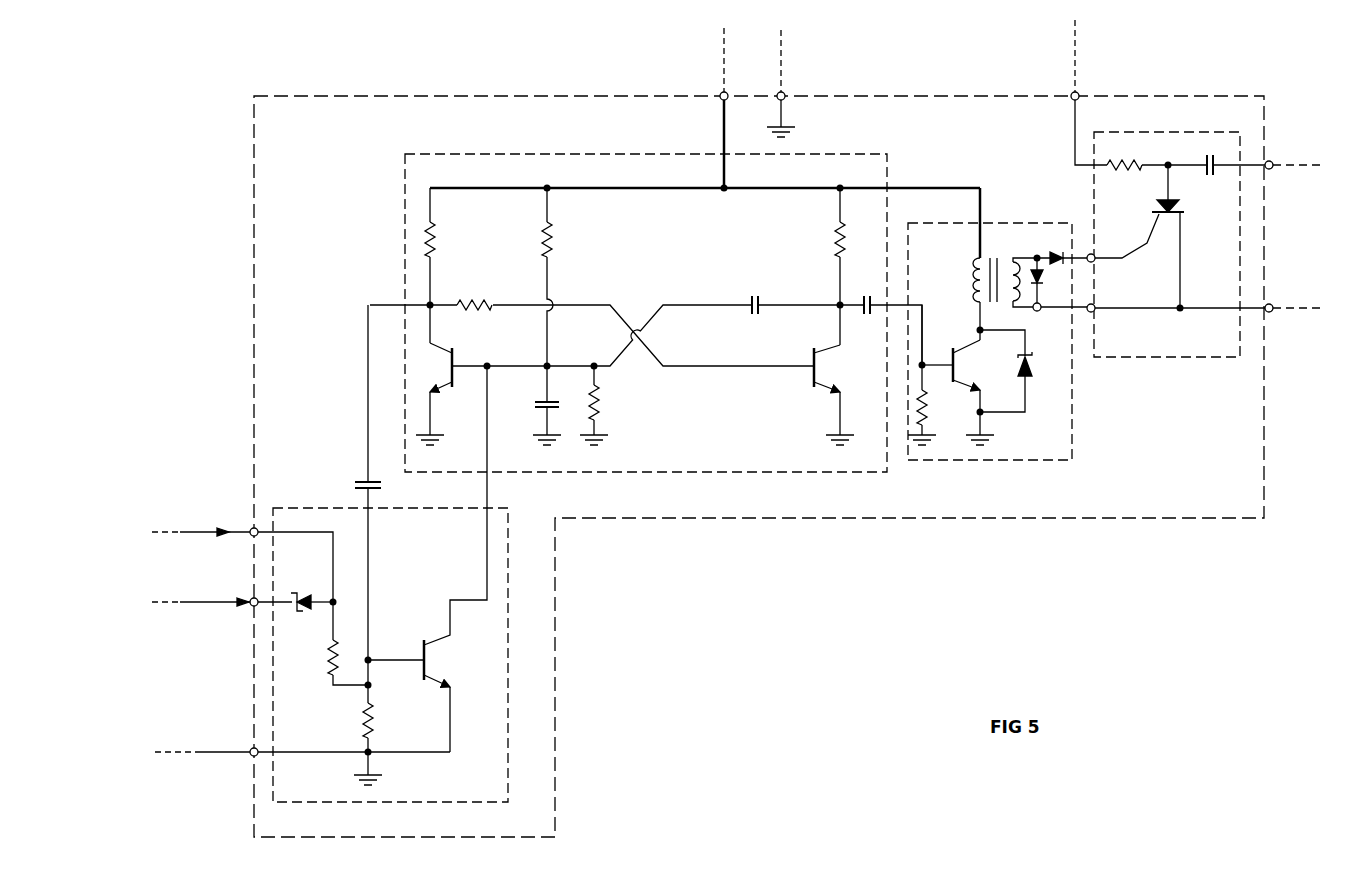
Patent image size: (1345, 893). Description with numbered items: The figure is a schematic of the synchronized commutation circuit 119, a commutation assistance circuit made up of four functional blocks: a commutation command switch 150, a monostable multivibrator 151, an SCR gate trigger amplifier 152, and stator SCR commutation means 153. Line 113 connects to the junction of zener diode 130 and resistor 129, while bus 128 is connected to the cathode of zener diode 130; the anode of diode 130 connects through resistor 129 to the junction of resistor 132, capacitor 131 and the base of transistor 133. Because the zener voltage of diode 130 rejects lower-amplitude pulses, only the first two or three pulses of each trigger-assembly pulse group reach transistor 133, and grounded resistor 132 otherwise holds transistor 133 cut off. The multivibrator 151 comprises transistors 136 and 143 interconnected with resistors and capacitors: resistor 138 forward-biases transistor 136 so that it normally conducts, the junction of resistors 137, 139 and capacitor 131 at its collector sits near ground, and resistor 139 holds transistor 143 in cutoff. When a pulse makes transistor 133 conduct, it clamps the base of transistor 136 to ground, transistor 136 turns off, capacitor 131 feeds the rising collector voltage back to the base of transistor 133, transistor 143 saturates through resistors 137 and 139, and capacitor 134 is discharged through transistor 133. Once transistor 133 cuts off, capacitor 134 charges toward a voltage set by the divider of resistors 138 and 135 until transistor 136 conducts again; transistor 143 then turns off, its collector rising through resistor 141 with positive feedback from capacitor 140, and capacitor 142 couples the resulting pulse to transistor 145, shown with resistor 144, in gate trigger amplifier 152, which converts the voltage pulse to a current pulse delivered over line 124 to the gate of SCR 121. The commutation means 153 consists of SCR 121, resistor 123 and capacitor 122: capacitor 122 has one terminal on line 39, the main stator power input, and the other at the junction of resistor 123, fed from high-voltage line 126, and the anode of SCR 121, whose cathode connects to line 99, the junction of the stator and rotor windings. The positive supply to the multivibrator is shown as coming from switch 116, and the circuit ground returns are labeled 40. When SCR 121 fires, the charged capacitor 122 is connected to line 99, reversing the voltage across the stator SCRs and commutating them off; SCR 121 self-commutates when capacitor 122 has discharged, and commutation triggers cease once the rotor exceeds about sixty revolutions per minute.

The switch 116 is at (722, 76).
The ground 40 is at (786, 84).
The synchronized commutation circuit 119 is at (759, 466).
The line 126 is at (1078, 84).
The line 39 is at (1280, 165).
The line 99 is at (1282, 308).
The SCR 121 is at (1160, 208).
The capacitor 122 is at (1208, 178).
The resistor 123 is at (1128, 158).
The line 124 is at (1095, 262).
The monostable multivibrator 151 is at (430, 152).
The SCR gate trigger amplifier 152 is at (1005, 222).
The stator SCR commutation means 153 is at (1200, 360).
The commutation command switch 150 is at (293, 508).
The line 113 is at (214, 529).
The bus 128 is at (224, 600).
The resistor 129 is at (328, 657).
The zener diode 130 is at (300, 595).
The capacitor 131 is at (355, 485).
The resistor 132 is at (358, 718).
The transistor 133 is at (440, 665).
The capacitor 134 is at (540, 410).
The resistor 135 is at (601, 405).
The transistor 136 is at (455, 361).
The resistor 137 is at (437, 244).
The resistor 138 is at (553, 244).
The resistor 139 is at (478, 298).
The capacitor 140 is at (755, 297).
The resistor 141 is at (833, 236).
The capacitor 142 is at (866, 318).
The transistor 143 is at (835, 382).
The resistor 144 is at (930, 410).
The transistor 145 is at (953, 355).